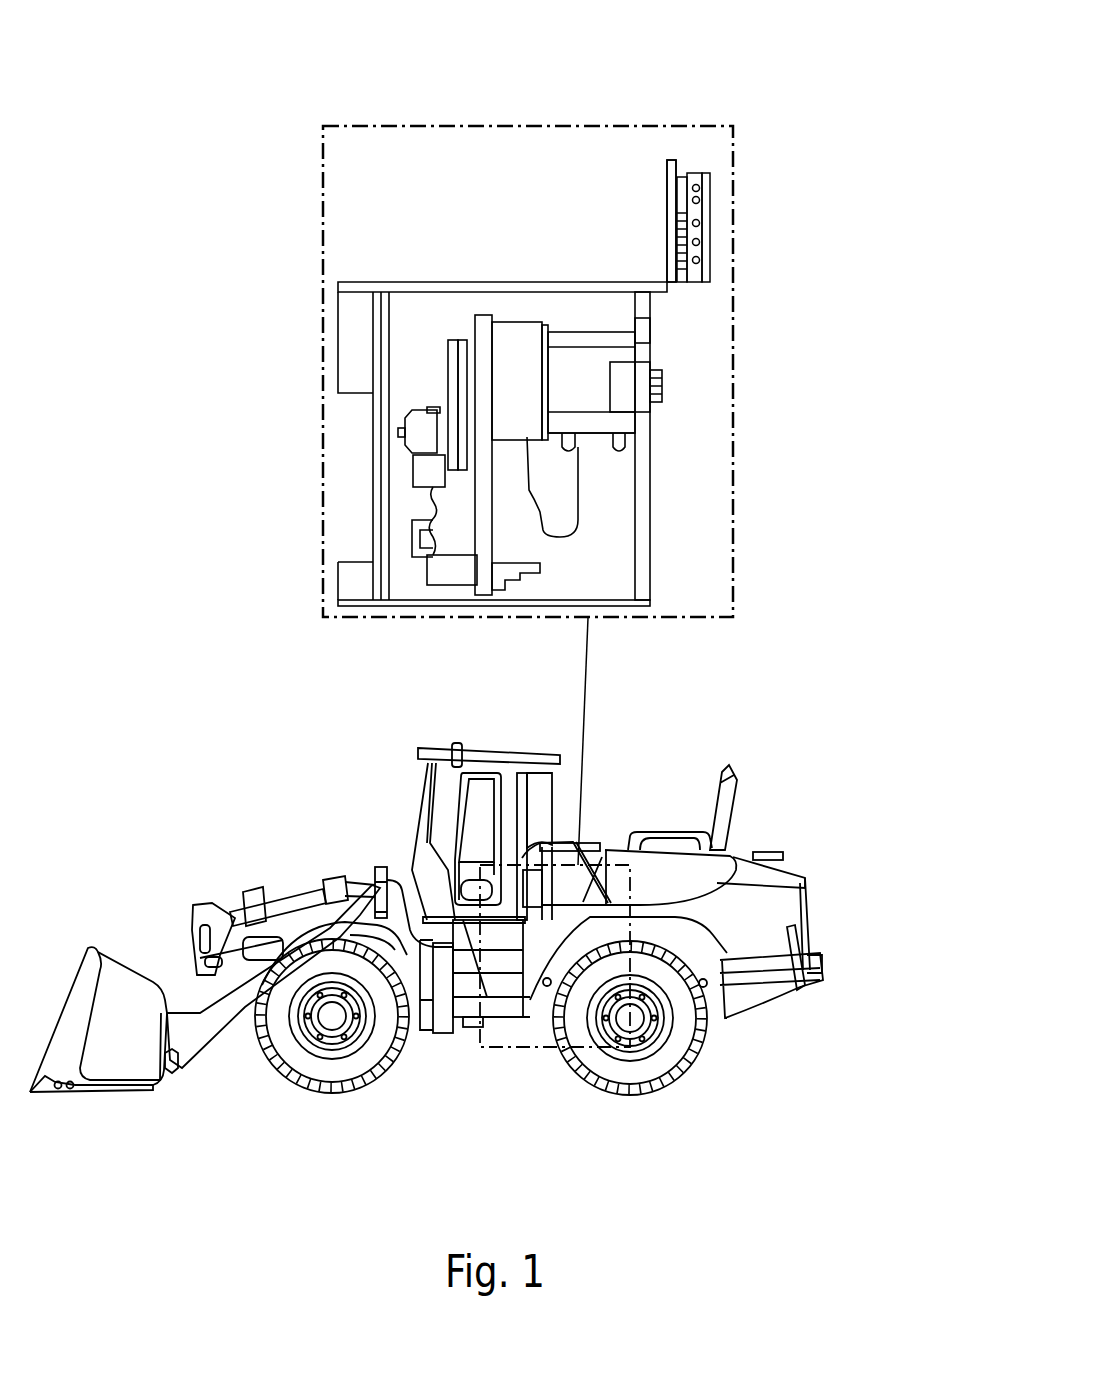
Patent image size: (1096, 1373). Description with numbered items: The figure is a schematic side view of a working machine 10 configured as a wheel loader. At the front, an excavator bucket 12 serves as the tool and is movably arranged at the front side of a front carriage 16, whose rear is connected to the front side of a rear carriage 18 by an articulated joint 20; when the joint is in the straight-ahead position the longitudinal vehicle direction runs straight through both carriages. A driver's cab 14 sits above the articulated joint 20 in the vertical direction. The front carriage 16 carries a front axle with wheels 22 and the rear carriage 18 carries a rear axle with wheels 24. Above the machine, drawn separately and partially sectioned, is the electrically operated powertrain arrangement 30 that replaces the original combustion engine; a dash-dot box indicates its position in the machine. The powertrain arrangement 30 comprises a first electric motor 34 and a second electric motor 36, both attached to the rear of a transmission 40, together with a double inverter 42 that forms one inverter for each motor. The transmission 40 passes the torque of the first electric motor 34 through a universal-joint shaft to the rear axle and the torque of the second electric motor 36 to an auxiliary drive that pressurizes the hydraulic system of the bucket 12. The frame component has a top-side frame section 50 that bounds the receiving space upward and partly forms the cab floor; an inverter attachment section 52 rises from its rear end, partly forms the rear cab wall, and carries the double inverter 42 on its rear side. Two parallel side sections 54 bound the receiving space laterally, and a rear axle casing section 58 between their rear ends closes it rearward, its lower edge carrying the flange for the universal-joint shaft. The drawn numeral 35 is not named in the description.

The working machine 10 is at (833, 773).
The excavator bucket 12 is at (112, 955).
The driver's cab 14 is at (432, 745).
The front carriage 16 is at (417, 1050).
The rear carriage 18 is at (752, 1022).
The articulated joint 20 is at (473, 1048).
The wheels 22 is at (308, 1092).
The wheels 24 is at (660, 1095).
The powertrain arrangement 30 is at (697, 117).
The first electric motor 34 is at (652, 358).
The sensor carrier 35 is at (660, 472).
The second electric motor 36 is at (622, 340).
The transmission 40 is at (480, 408).
The double inverter 42 is at (703, 208).
The top-side frame section 50 is at (483, 277).
The inverter attachment section 52 is at (662, 211).
The side sections 54 is at (420, 343).
The rear axle casing section 58 is at (660, 528).